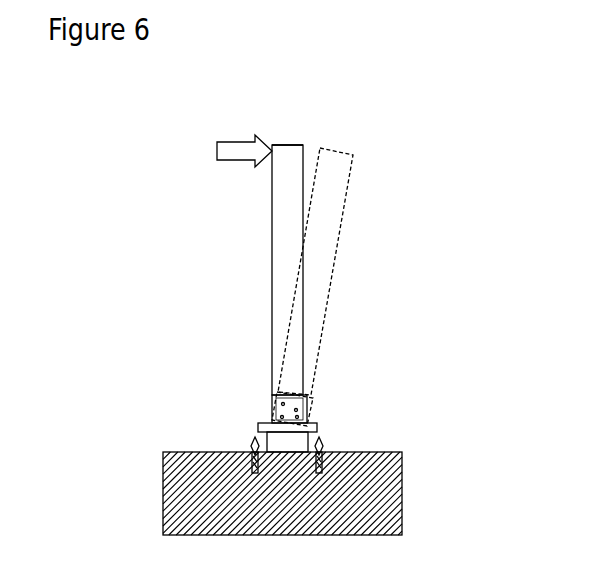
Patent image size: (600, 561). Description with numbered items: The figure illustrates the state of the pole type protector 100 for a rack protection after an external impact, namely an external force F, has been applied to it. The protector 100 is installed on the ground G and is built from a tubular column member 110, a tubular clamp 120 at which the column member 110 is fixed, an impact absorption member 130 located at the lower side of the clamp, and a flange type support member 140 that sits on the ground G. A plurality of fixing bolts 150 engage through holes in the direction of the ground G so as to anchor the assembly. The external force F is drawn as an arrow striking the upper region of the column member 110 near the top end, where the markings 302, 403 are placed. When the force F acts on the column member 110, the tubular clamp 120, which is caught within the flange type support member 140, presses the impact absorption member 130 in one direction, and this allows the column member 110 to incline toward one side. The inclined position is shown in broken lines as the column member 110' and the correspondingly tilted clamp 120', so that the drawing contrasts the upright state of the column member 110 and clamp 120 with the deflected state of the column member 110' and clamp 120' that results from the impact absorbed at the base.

The pole type protector 100 is at (183, 126).
The tubular column member 110 is at (246, 270).
The pole in tilted position 110' is at (361, 271).
The tubular clamp 120 is at (248, 386).
The bracket in tilted position 120' is at (332, 378).
The impact absorption member 130 is at (317, 437).
The flange type support member 140 is at (263, 427).
The fixing bolts 150 is at (255, 445).
The pole top 302 is at (288, 145).
The pole top 403 is at (310, 125).
The external force F is at (244, 140).
The ground G is at (392, 450).